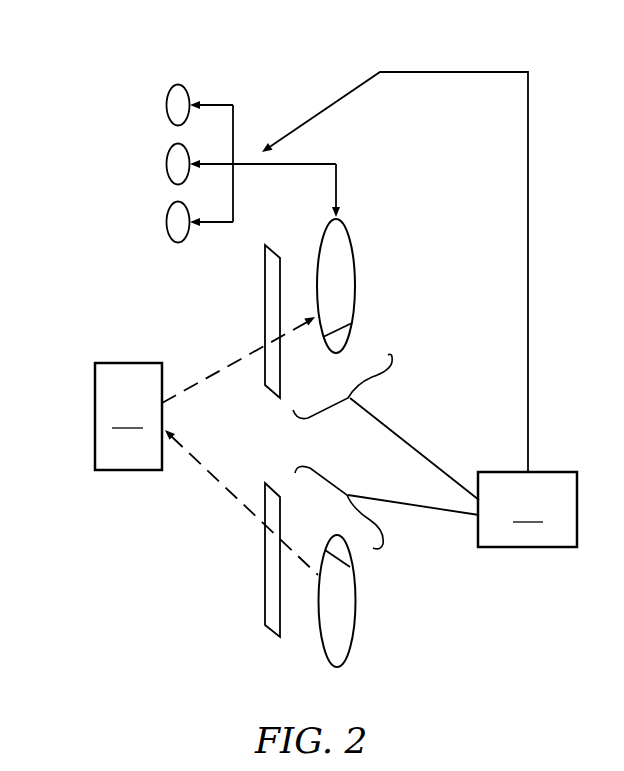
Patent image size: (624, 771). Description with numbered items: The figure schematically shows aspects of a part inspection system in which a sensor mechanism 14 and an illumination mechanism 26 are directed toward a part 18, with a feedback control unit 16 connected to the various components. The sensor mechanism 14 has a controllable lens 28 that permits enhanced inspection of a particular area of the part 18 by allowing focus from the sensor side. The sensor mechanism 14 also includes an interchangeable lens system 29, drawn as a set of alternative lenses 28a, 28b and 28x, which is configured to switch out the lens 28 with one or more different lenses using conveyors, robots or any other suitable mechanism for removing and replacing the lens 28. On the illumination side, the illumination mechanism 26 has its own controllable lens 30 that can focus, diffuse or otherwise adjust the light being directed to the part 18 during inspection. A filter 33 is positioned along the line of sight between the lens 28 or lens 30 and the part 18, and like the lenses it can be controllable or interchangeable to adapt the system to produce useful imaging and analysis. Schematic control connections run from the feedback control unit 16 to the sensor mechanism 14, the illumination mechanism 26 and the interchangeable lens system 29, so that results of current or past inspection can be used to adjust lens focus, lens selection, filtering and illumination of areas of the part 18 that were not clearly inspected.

The sensor mechanism 14 is at (417, 258).
The feedback control unit 16 is at (527, 509).
The part 18 is at (128, 416).
The illumination mechanism 26 is at (309, 583).
The controllable lens 28 is at (353, 258).
The different lens 28a is at (167, 107).
The different lens 28b is at (167, 167).
The different lens 28x is at (168, 217).
The interchangeable lens system 29 is at (263, 110).
The controllable lens 30 is at (355, 612).
The filter 33 is at (265, 568).